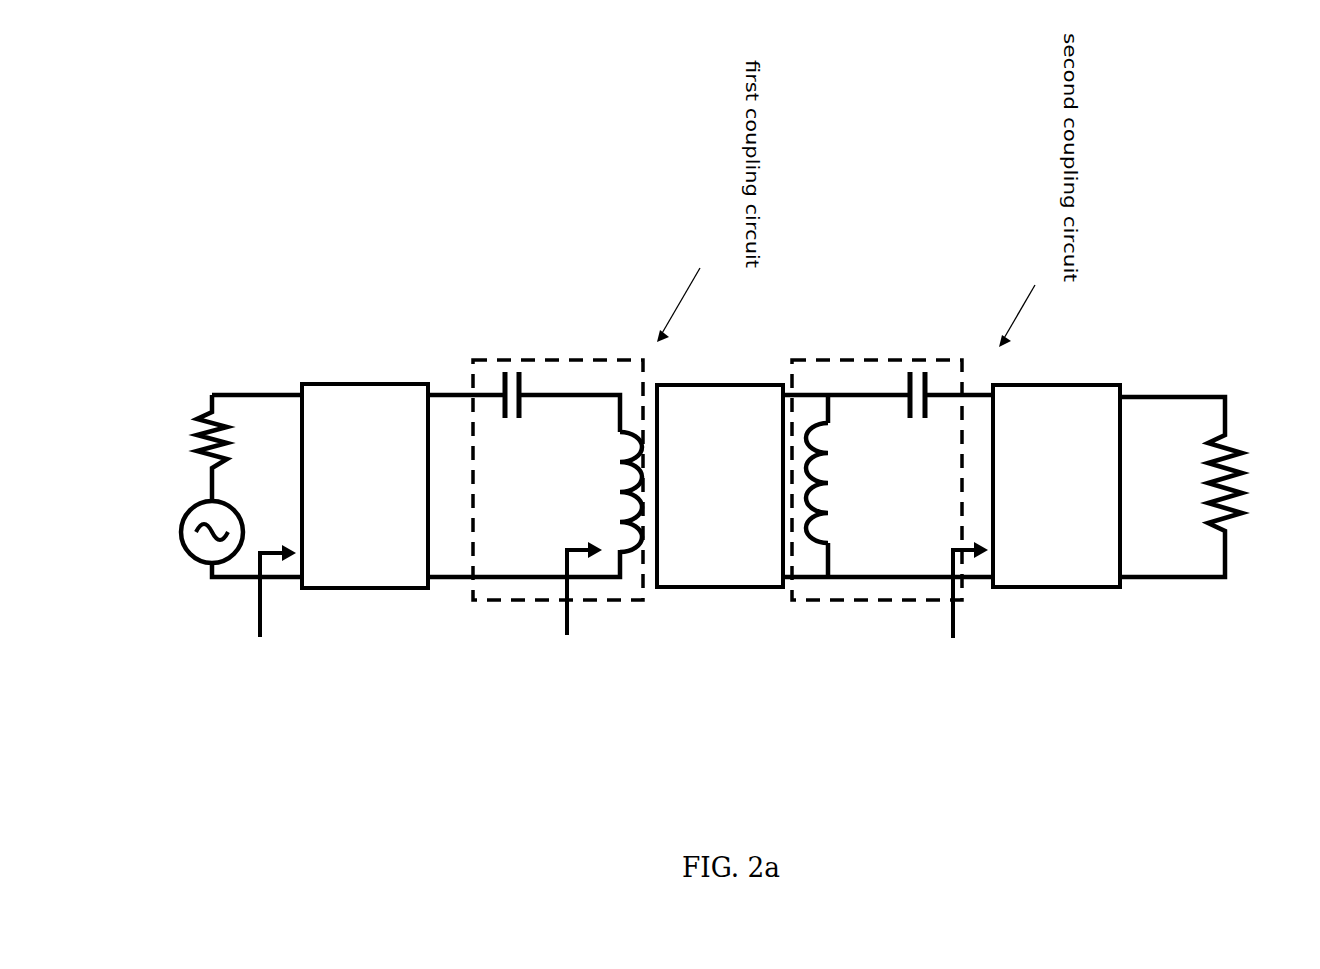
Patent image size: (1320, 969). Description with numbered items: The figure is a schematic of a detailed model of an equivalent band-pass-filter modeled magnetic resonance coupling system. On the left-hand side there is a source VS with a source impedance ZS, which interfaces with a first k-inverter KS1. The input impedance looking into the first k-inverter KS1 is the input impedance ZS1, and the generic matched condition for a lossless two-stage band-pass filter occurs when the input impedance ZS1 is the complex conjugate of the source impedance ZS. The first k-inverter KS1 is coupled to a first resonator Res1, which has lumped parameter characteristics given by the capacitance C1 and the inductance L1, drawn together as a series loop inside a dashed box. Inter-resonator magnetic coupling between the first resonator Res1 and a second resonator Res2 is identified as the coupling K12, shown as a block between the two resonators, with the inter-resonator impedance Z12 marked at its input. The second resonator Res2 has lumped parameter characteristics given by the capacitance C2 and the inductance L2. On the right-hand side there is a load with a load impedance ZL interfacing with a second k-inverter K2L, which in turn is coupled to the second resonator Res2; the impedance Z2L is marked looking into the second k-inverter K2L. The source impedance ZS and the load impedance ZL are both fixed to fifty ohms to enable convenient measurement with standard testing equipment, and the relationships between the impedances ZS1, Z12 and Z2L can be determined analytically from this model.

The source impedance ZS is at (176, 448).
The source VS is at (184, 532).
The first k-inverter KS1 is at (365, 486).
The input impedance ZS1 is at (261, 614).
The first resonator Res1 is at (558, 457).
The capacitance of first resonator C1 is at (519, 420).
The inductance of first resonator L1 is at (610, 492).
The inter-resonator impedance Z12 is at (568, 613).
The inter-resonator magnetic coupling K12 is at (720, 486).
The second resonator Res2 is at (877, 457).
The capacitance of second resonator C2 is at (923, 421).
The inductance of second resonator L2 is at (845, 483).
The impedance looking into second k-inverter Z2L is at (953, 613).
The second k-inverter K2L is at (1056, 486).
The load impedance ZL is at (1206, 487).